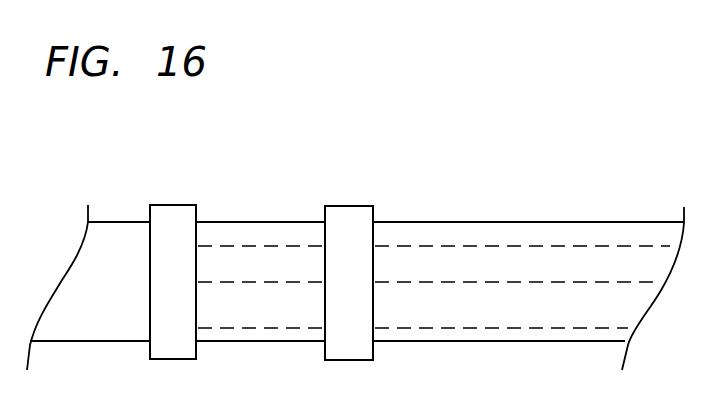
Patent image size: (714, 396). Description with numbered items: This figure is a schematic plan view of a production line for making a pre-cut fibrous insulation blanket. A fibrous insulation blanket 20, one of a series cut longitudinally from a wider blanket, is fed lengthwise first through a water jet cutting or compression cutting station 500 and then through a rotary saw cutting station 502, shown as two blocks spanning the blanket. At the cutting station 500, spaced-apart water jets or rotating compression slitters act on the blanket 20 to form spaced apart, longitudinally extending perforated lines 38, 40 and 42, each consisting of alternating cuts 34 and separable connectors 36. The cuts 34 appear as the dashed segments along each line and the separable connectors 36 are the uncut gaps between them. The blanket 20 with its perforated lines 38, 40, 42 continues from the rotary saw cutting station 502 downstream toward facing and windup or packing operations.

The unfaced pre-cut fibrous insulation blanket 20 is at (124, 242).
The cuts 34 is at (225, 246).
The separable connectors 36 is at (285, 246).
The perforated line 38 is at (583, 282).
The perforated line 40 is at (605, 330).
The perforated line 42 is at (628, 330).
The water jet cutting or compression cutting station 500 is at (178, 226).
The rotary saw cutting station 502 is at (352, 216).